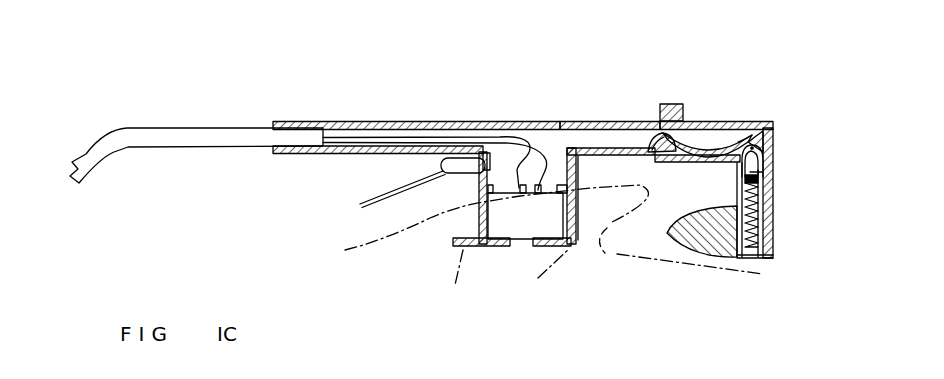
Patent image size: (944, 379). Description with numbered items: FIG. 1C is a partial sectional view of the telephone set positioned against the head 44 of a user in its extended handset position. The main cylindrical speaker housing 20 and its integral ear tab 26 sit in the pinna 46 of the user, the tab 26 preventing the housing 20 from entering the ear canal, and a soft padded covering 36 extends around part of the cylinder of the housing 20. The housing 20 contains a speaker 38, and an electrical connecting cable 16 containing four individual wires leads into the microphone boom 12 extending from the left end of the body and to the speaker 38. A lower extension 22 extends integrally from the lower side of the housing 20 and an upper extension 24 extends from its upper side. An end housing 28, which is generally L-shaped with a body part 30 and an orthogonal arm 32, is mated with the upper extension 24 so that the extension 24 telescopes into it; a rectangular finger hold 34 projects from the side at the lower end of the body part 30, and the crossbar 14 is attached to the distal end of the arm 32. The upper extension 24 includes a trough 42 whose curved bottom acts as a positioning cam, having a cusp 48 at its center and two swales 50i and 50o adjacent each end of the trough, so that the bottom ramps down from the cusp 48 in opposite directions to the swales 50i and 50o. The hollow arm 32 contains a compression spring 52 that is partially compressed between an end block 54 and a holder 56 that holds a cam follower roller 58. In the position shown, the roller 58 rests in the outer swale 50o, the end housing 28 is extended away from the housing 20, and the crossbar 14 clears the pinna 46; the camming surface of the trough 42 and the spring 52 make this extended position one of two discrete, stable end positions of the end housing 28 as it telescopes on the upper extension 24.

The microphone boom 12 is at (150, 135).
The crossbar 14 is at (690, 247).
The electrical connecting cable 16 is at (377, 196).
The main cylindrical speaker housing 20 is at (480, 188).
The lower extension 22 is at (352, 121).
The upper extension 24 is at (600, 121).
The ear tab 26 is at (453, 242).
The end housing 28 is at (723, 120).
The body part 30 is at (760, 117).
The arm 32 is at (767, 230).
The finger hold 34 is at (681, 97).
The soft padded covering 36 is at (578, 225).
The speaker 38 is at (527, 248).
The trough 42 is at (673, 158).
The head 44 is at (345, 252).
The pinna 46 is at (630, 216).
The cusp 48 is at (707, 162).
The inner swale 50i is at (657, 150).
The outer swale 50o is at (742, 140).
The compression spring 52 is at (762, 203).
The end block 54 is at (766, 257).
The holder 56 is at (762, 157).
The cam follower roller 58 is at (757, 140).